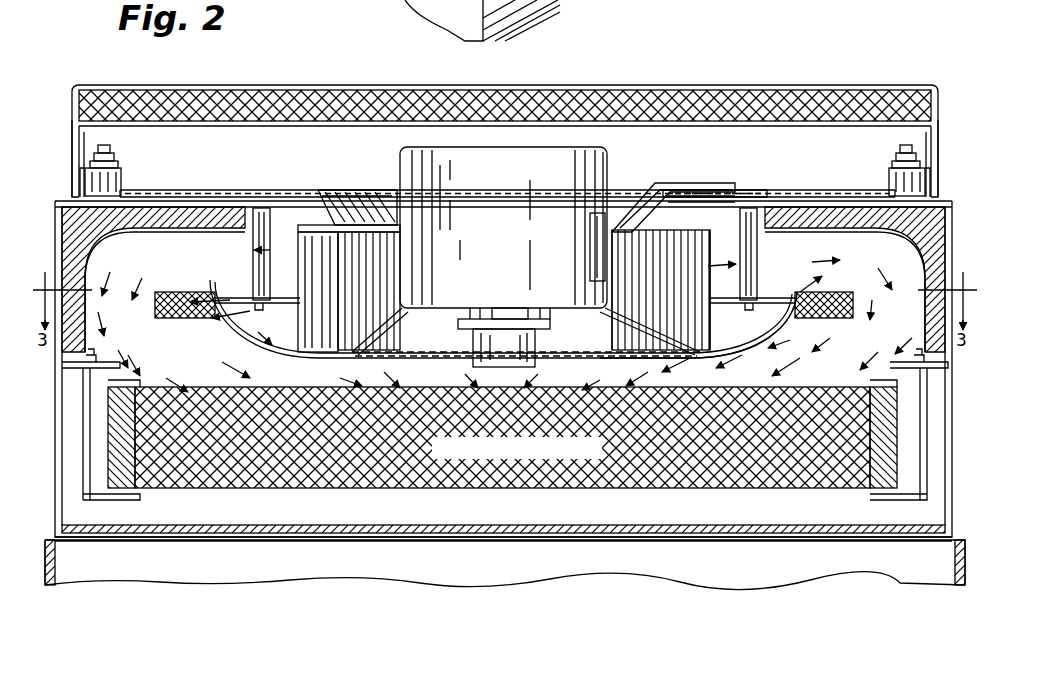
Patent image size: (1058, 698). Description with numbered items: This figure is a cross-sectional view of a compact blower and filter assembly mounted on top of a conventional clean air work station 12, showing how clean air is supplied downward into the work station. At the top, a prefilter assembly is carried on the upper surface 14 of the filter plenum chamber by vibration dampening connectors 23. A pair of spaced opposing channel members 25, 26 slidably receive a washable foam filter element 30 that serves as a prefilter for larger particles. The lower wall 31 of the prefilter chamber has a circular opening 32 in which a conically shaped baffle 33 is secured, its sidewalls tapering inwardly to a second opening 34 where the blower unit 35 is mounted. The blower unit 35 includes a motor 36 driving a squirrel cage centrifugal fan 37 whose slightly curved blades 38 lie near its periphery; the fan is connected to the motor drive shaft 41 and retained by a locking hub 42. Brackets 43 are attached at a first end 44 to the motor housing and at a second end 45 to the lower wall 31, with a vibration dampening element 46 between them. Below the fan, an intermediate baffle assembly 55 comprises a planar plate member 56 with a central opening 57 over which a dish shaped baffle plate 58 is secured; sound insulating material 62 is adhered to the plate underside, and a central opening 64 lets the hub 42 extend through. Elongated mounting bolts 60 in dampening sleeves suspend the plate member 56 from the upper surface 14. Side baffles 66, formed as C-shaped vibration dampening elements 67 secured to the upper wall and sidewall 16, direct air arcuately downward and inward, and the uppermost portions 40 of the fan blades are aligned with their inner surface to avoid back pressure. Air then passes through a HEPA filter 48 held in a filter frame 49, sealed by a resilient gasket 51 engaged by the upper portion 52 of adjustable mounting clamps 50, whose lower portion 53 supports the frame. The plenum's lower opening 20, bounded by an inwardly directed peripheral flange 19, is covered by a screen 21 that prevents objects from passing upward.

The clean air work station 12 is at (382, 568).
The upper surface 14 is at (164, 192).
The sidewall 16 is at (945, 256).
The inwardly directed peripheral flange 19 is at (85, 545).
The lower opening 20 is at (918, 536).
The screen 21 is at (746, 536).
The vibration dampening connectors 23 is at (112, 180).
The channel member 25 is at (108, 86).
The channel member 26 is at (903, 88).
The filter element 30 is at (630, 90).
The lower wall 31 is at (210, 192).
The circular opening 32 is at (322, 190).
The conically shaped baffle 33 is at (662, 194).
The second opening 34 is at (360, 222).
The blower unit 35 is at (484, 142).
The motor 36 is at (507, 228).
The centrifugal fan 37 is at (380, 238).
The blades 38 is at (700, 323).
The uppermost portions of fan blades 40 is at (306, 236).
The motor drive shaft 41 is at (505, 312).
The locking hub 42 is at (475, 362).
The brackets 43 is at (637, 190).
The first end of bracket 44 is at (598, 235).
The second end of bracket 45 is at (700, 188).
The vibration dampening element 46 is at (722, 196).
The HEPA filter 48 is at (678, 468).
The filter frame 49 is at (152, 386).
The mounting clamps 50 is at (914, 366).
The resilient gasket 51 is at (130, 382).
The upper portion of clamp 52 is at (118, 368).
The lower portion of clamp 53 is at (138, 495).
The intermediate baffle assembly 55 is at (186, 292).
The plate member 56 is at (840, 292).
The opening 57 is at (772, 296).
The dish shaped baffle plate 58 is at (770, 332).
The mounting bolts 60 is at (266, 240).
The sound insulating material 62 is at (192, 318).
The central opening 64 is at (537, 365).
The side baffles 66 is at (804, 213).
The C-shaped vibration dampening elements 67 is at (165, 248).